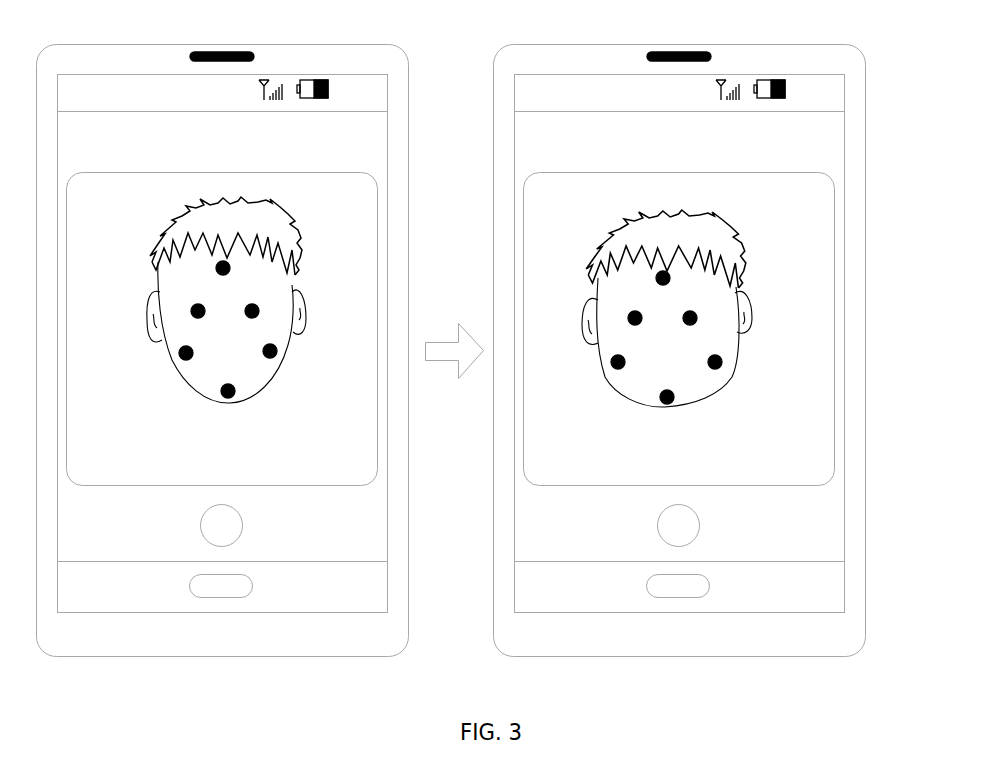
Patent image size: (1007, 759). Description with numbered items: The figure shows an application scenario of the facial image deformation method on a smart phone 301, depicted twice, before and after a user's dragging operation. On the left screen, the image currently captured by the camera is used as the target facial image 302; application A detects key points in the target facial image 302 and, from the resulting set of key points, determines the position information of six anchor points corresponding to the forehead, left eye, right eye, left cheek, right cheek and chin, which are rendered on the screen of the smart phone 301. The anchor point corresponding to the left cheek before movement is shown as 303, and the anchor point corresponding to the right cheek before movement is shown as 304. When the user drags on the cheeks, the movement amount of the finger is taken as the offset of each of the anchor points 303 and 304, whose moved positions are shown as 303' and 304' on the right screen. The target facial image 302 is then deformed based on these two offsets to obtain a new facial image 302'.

The smart phone 301 is at (393, 44).
The target facial image 302 is at (263, 300).
The anchor point corresponding to the left cheek 303 is at (173, 329).
The anchor point corresponding to the right cheek 304 is at (302, 333).
The new facial image 302' is at (703, 308).
The moved anchor point corresponding to the left cheek 303' is at (607, 337).
The moved anchor point corresponding to the right cheek 304' is at (749, 342).